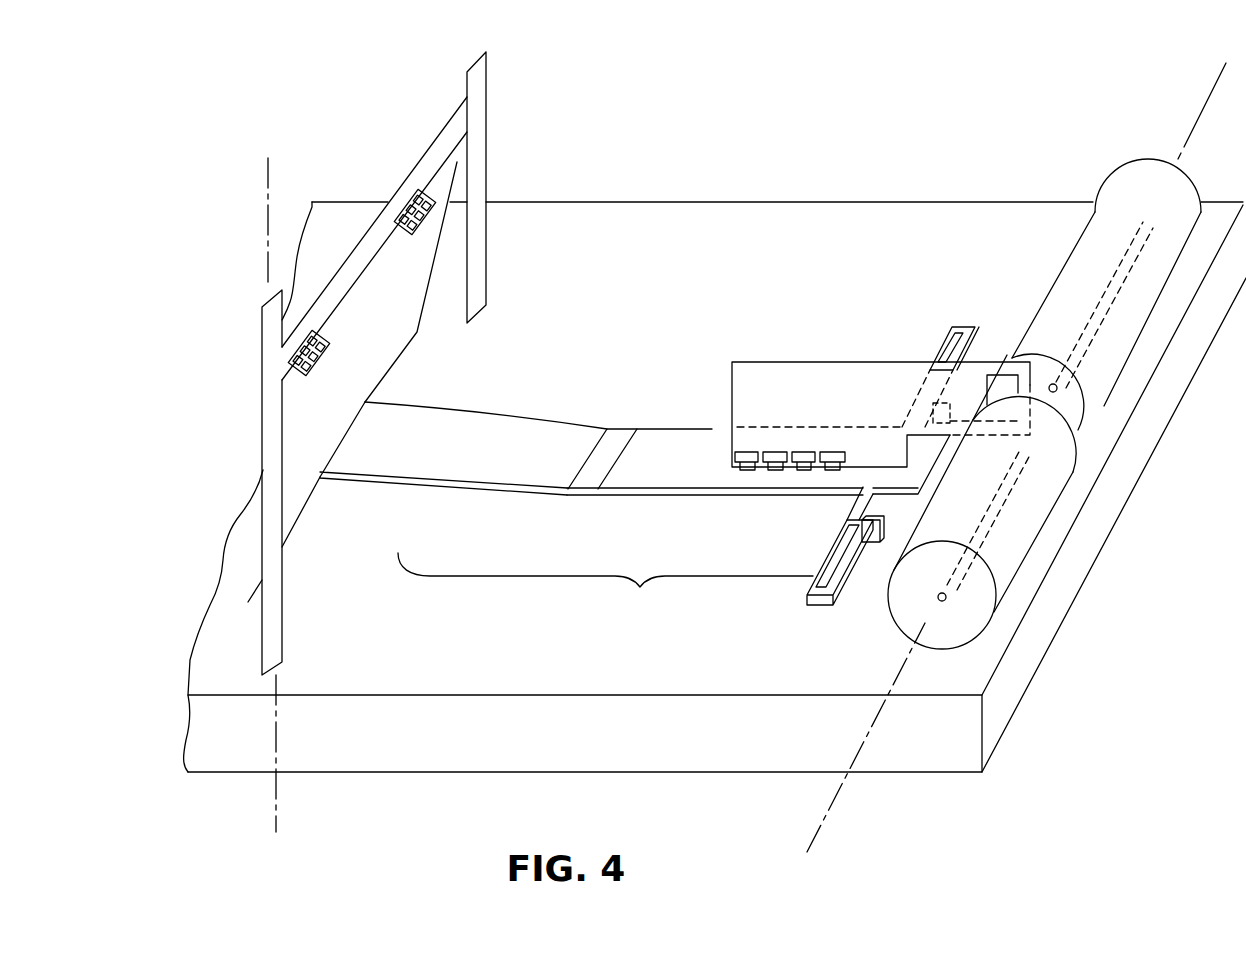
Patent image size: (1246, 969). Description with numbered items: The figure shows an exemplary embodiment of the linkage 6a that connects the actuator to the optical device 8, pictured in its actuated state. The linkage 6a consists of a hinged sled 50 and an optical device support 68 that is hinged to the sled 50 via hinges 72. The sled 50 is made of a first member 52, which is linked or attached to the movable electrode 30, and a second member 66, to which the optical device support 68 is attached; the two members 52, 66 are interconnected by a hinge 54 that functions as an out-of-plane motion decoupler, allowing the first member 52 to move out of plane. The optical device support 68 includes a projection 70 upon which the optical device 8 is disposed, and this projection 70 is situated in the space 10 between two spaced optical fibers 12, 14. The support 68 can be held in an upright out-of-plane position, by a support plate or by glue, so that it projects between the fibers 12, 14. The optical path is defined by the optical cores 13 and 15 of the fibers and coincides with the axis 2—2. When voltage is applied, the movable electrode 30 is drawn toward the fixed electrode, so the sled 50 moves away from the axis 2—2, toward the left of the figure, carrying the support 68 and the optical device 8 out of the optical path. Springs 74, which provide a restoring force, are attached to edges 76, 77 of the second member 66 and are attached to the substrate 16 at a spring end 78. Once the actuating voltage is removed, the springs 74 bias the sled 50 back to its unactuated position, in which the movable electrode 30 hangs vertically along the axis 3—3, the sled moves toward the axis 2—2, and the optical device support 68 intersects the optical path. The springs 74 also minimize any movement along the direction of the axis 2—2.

The axis 2— 2 is at (1204, 102).
The axis 3— 3 is at (266, 164).
The linkage 6a is at (605, 589).
The optical device 8 is at (998, 380).
The space 10 is at (1085, 407).
The optical fiber 12 is at (997, 544).
The optical core 13 is at (1000, 490).
The optical fiber 14 is at (1111, 327).
The optical core 15 is at (1112, 280).
The substrate 16 is at (391, 641).
The movable electrode 30 is at (351, 366).
The sled 50 is at (548, 396).
The first member 52 is at (452, 462).
The hinge 54 is at (620, 438).
The second member 66 is at (656, 472).
The optical device support 68 is at (807, 397).
The projection 70 is at (970, 388).
The hinges 72 is at (778, 443).
The springs 74 is at (960, 330).
The edge 76 is at (848, 490).
The edge 77 is at (873, 427).
The spring end 78 is at (880, 555).